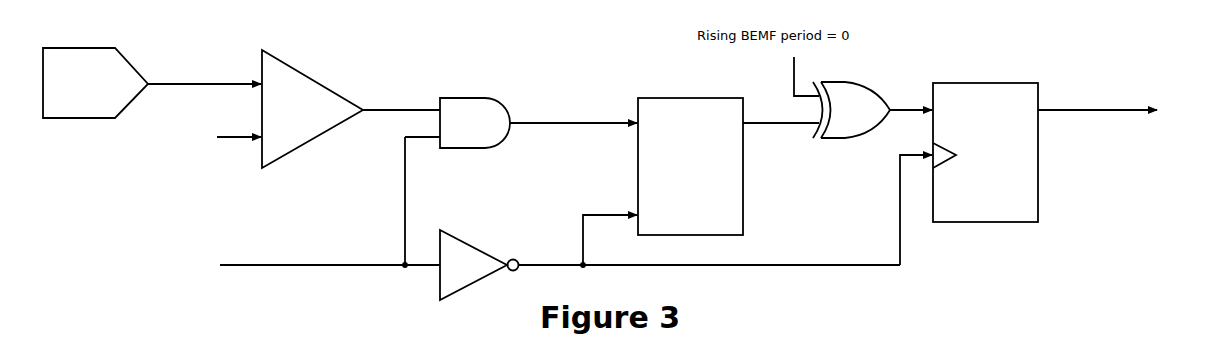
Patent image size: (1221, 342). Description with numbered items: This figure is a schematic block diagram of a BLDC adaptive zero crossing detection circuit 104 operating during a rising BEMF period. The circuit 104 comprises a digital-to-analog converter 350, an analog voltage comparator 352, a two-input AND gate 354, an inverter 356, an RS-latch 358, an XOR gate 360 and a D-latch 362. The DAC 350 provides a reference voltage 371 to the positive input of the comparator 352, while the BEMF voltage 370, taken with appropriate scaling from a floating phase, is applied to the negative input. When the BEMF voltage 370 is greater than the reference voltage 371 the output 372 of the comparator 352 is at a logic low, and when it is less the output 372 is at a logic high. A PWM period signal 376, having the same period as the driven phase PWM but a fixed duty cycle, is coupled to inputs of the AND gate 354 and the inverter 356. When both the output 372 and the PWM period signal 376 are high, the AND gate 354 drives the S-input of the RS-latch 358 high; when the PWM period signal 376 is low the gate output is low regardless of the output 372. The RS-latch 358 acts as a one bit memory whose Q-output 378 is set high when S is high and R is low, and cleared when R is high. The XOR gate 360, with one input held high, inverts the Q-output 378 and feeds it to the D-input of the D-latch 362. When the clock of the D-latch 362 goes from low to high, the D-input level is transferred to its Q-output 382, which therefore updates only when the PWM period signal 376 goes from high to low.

The BLDC adaptive zero crossing detection circuit 104 is at (789, 310).
The digital-to-analog converter 350 is at (125, 58).
The analog voltage comparator 352 is at (312, 79).
The two-input AND gate 354 is at (475, 96).
The inverter 356 is at (470, 240).
The RS-latch 358 is at (745, 185).
The XOR gate 360 is at (848, 135).
The D-latch 362 is at (995, 222).
The BEMF voltage 370 is at (246, 140).
The reference voltage 371 is at (162, 84).
The comparator output 372 is at (380, 107).
The PWM period signal 376 is at (258, 263).
The Q-output of RS-latch 378 is at (760, 124).
The Q-output of D-latch 382 is at (1065, 112).